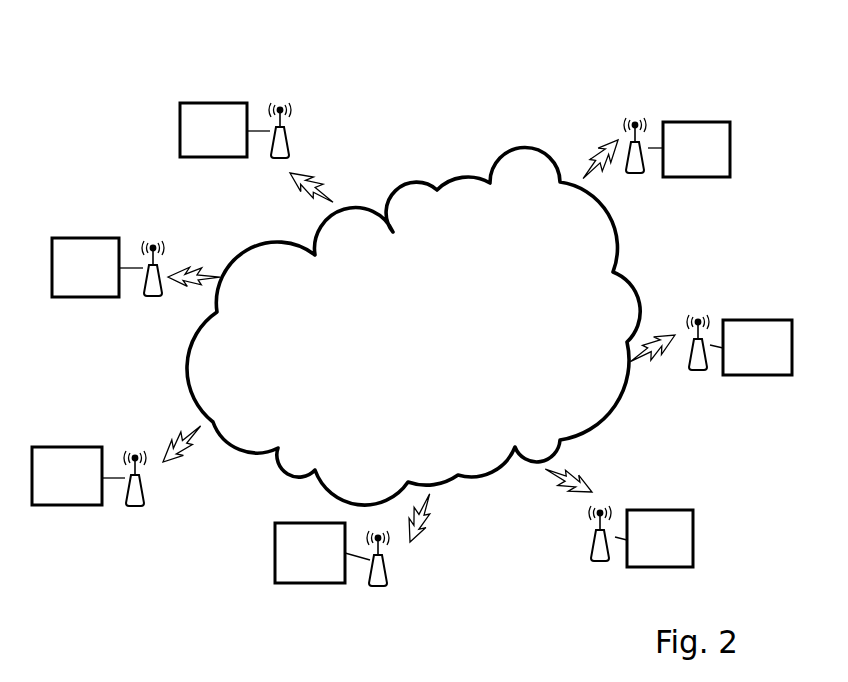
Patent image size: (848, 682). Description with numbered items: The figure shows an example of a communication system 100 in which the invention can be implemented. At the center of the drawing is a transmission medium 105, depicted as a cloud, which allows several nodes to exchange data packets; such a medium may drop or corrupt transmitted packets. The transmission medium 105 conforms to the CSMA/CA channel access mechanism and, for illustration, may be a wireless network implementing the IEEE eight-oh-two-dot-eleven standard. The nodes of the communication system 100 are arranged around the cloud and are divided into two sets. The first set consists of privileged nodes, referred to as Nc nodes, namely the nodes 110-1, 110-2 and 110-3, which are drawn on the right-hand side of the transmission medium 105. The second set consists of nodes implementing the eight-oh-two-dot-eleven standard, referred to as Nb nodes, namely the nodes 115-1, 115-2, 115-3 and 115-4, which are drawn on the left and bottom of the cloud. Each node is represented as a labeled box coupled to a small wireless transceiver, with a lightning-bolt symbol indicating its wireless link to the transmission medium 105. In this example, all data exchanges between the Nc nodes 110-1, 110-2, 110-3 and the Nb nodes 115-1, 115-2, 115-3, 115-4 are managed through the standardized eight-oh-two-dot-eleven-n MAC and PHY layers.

The communication system 100 is at (552, 88).
The transmission medium 105 is at (463, 178).
The privileged node Nc1 110-1 is at (658, 510).
The privileged node Nc2 110-2 is at (757, 320).
The privileged node Nc3 110-3 is at (697, 122).
The 802.11 node Nb1 115-1 is at (212, 103).
The 802.11 node Nb2 115-2 is at (85, 238).
The 802.11 node Nb3 115-3 is at (68, 447).
The 802.11 node Nb4 115-4 is at (310, 583).